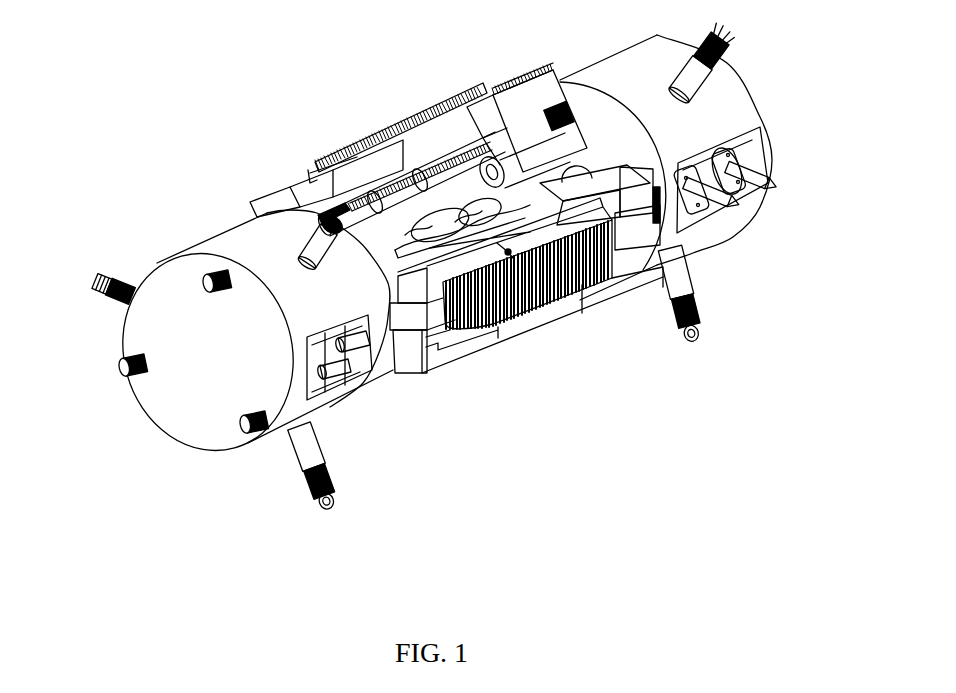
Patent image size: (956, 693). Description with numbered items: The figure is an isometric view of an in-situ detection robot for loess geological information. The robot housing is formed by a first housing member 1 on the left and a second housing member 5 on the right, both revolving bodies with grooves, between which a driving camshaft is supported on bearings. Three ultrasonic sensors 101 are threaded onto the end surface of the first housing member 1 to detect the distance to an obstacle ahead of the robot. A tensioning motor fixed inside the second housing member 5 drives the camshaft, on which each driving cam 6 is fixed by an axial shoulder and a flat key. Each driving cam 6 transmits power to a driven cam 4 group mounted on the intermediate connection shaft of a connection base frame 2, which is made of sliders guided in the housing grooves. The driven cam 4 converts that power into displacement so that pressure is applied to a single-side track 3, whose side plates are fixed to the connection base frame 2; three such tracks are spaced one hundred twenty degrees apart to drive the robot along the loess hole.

The first housing member 1 is at (186, 337).
The ultrasonic sensor 101 is at (247, 428).
The connection base frame 2 is at (293, 200).
The single-side track 3 is at (437, 142).
The driven cam 4 is at (508, 252).
The second housing member 5 is at (660, 153).
The driving cam 6 is at (531, 250).